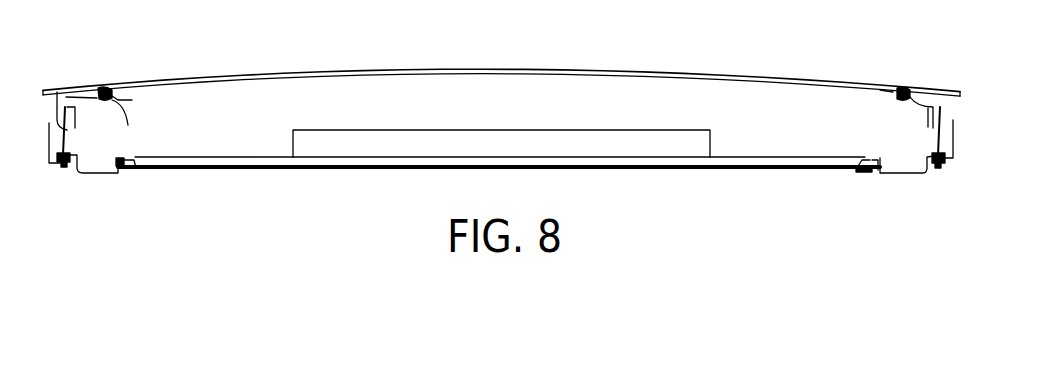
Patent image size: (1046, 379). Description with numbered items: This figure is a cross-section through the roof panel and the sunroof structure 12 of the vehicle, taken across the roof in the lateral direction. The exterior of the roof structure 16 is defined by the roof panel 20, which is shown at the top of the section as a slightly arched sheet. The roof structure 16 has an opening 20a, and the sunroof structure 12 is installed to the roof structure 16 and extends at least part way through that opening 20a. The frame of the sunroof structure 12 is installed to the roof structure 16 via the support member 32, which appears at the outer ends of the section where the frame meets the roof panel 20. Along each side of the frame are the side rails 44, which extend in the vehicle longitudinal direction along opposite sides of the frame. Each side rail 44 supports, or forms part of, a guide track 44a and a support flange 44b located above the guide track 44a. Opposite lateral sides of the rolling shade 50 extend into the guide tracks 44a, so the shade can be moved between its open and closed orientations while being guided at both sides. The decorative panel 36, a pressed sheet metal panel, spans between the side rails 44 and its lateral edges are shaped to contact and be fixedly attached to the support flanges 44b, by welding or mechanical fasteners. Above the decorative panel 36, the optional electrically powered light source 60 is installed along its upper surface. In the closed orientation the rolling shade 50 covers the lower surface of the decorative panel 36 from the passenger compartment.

The sunroof structure 12 is at (345, 70).
The roof structure 16 is at (80, 91).
The roof panel 20 is at (102, 87).
The opening 20a is at (128, 125).
The support member 32 is at (897, 96).
The decorative panel 36 is at (200, 156).
The side rails 44 is at (57, 92).
The guide tracks 44a is at (136, 173).
The support flanges 44b is at (110, 166).
The rolling shade 50 is at (242, 173).
The electrically powered light source 60 is at (562, 147).